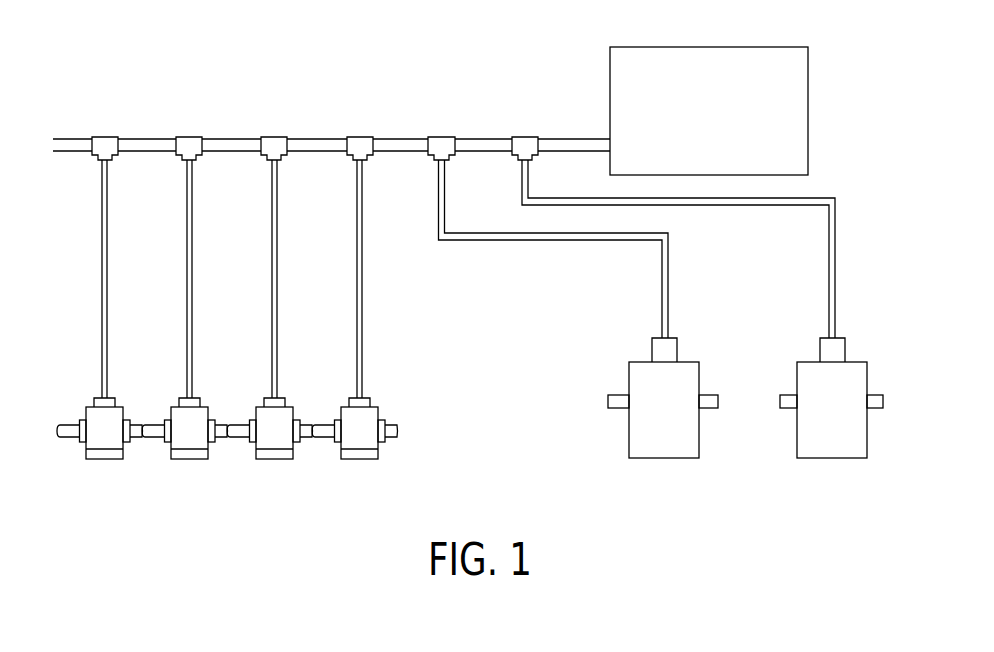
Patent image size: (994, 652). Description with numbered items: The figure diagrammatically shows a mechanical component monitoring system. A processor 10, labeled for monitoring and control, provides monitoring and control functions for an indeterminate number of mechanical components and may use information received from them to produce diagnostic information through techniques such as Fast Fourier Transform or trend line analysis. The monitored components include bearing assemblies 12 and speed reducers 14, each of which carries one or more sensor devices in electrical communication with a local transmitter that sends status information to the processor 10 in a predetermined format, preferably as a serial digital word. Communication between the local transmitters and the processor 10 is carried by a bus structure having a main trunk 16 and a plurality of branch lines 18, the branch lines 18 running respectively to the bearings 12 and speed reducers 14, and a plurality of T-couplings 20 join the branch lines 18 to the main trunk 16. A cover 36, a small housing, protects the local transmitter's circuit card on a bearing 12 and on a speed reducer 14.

The processor 10 is at (680, 47).
The bearing assemblies 12 is at (177, 447).
The speed reducers 14 is at (660, 445).
The main trunk 16 is at (230, 137).
The branch lines 18 is at (101, 250).
The T-couplings 20 is at (183, 137).
The cover 36 is at (370, 405).